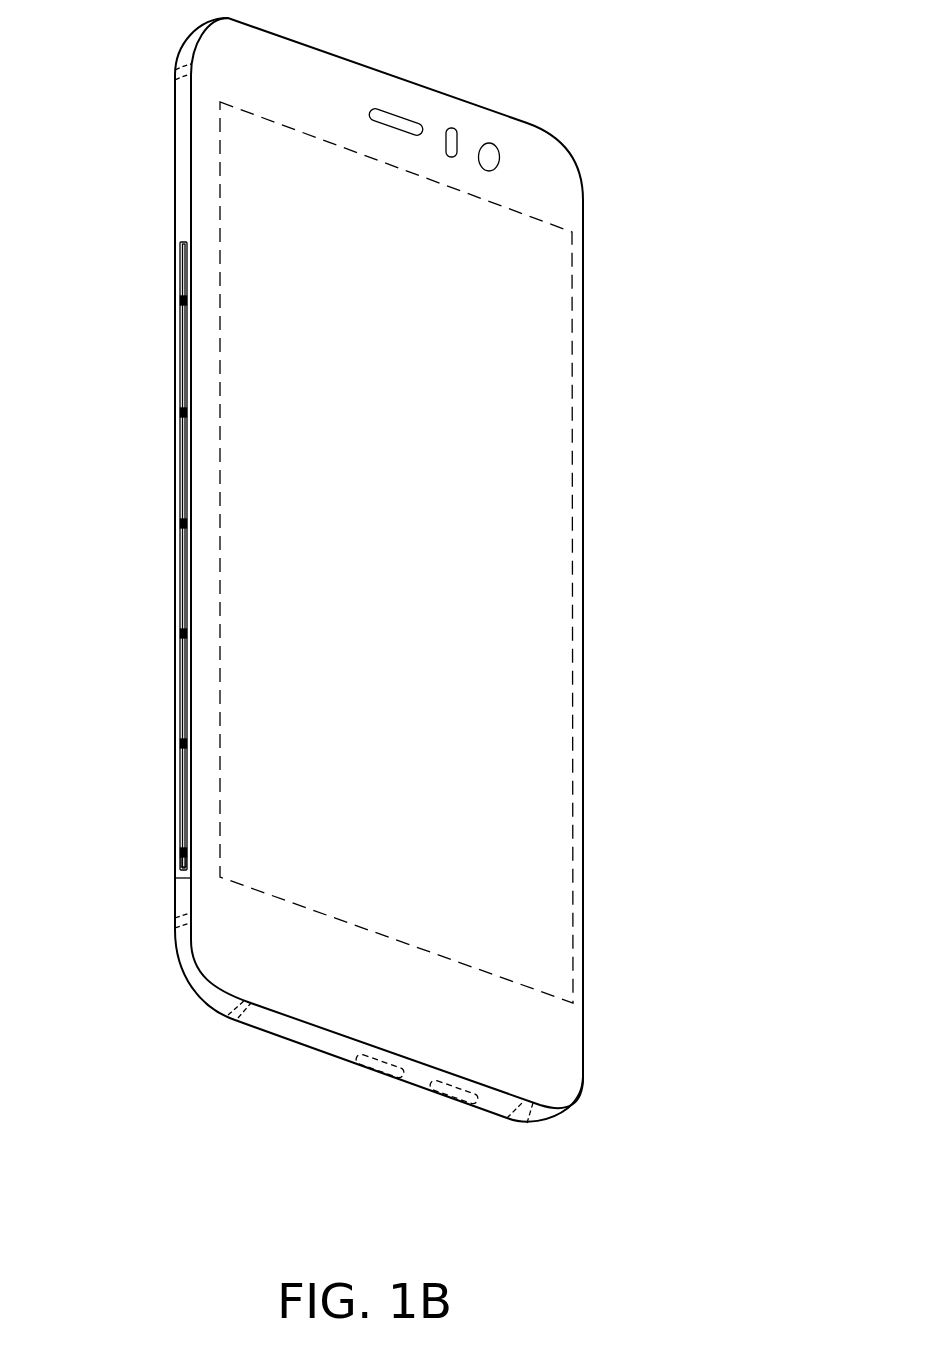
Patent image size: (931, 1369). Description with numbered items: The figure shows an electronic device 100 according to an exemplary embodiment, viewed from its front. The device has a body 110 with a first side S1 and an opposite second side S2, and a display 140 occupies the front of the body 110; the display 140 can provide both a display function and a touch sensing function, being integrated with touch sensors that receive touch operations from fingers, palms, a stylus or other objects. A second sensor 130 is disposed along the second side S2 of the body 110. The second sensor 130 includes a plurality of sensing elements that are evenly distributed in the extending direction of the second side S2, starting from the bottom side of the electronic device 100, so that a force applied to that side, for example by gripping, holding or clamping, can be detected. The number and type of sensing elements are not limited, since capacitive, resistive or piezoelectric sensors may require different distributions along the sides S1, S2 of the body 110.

The electronic device 100 is at (769, 1176).
The body 110 is at (577, 199).
The display 140 is at (550, 322).
The second sensor 130 is at (180, 366).
The first side S1 is at (584, 408).
The second side S2 is at (182, 212).